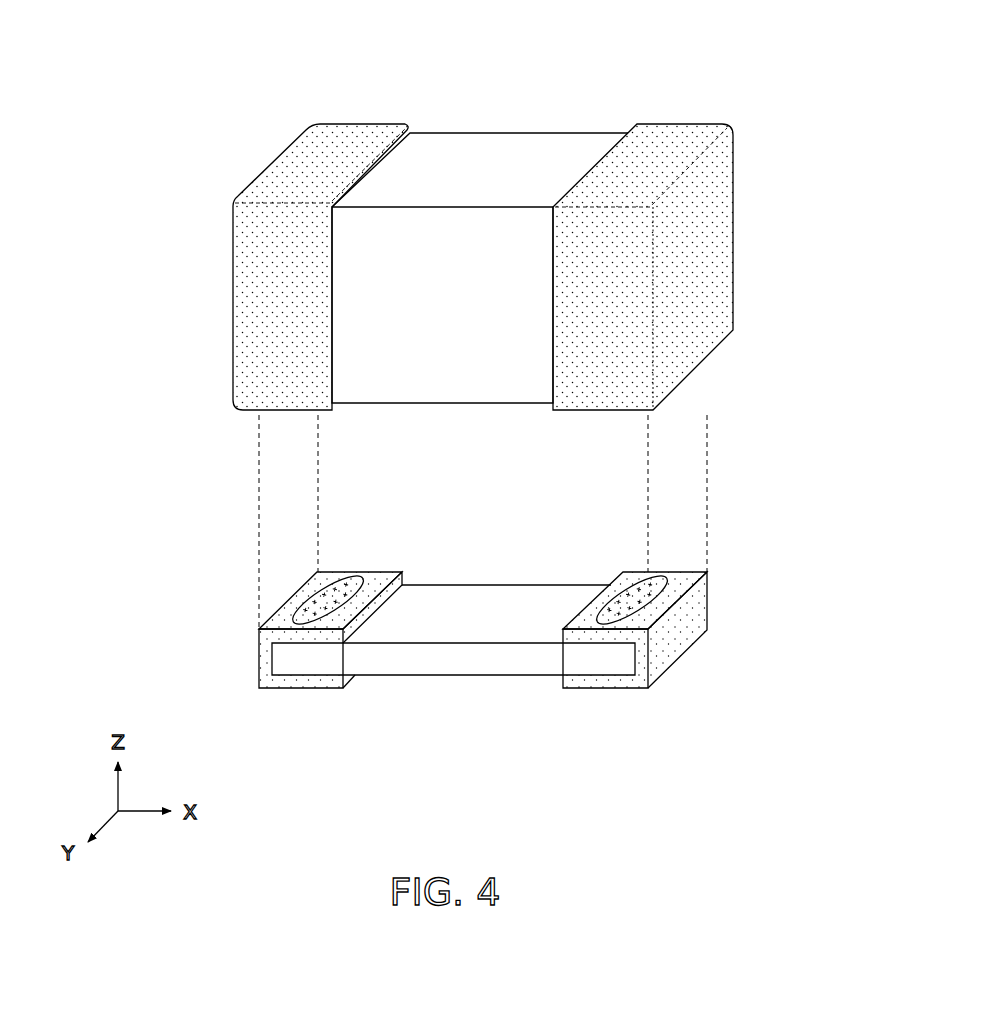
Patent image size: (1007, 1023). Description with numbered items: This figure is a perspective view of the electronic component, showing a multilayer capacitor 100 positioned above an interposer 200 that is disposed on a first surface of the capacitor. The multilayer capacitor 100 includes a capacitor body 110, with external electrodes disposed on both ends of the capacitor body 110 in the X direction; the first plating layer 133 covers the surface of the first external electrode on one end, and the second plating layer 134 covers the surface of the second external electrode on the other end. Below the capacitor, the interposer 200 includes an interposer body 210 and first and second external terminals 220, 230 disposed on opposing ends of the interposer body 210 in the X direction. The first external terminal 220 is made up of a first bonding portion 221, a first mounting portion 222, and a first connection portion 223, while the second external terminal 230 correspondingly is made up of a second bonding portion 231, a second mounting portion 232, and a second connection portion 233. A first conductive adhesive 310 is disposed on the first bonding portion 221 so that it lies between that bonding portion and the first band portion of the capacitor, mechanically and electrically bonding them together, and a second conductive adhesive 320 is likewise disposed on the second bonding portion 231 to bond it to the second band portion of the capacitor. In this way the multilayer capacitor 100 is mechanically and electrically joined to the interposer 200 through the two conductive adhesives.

The multilayer capacitor 100 is at (486, 212).
The capacitor body 110 is at (498, 150).
The first plating layer 133 is at (253, 268).
The second plating layer 134 is at (724, 175).
The interposer 200 is at (456, 647).
The interposer body 210 is at (480, 672).
The first external terminal 220 is at (262, 659).
The first bonding portion 221 is at (297, 637).
The first mounting portion 222 is at (297, 687).
The first connection portion 223 is at (262, 668).
The second external terminal 230 is at (677, 666).
The second bonding portion 231 is at (612, 637).
The second mounting portion 232 is at (617, 688).
The second connection portion 233 is at (643, 672).
The first conductive adhesive 310 is at (347, 583).
The second conductive adhesive 320 is at (637, 590).